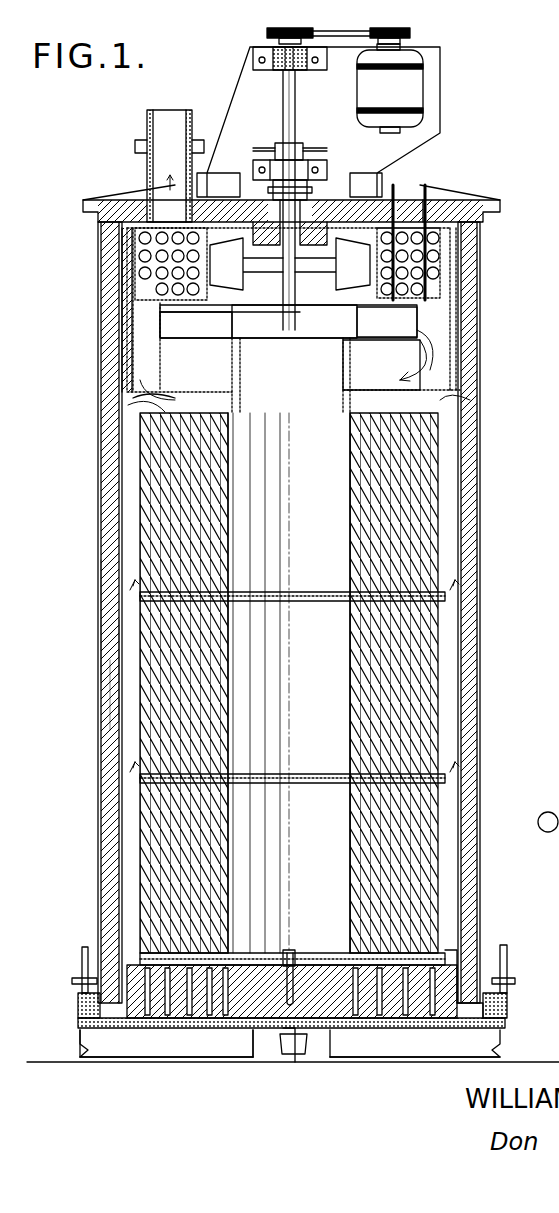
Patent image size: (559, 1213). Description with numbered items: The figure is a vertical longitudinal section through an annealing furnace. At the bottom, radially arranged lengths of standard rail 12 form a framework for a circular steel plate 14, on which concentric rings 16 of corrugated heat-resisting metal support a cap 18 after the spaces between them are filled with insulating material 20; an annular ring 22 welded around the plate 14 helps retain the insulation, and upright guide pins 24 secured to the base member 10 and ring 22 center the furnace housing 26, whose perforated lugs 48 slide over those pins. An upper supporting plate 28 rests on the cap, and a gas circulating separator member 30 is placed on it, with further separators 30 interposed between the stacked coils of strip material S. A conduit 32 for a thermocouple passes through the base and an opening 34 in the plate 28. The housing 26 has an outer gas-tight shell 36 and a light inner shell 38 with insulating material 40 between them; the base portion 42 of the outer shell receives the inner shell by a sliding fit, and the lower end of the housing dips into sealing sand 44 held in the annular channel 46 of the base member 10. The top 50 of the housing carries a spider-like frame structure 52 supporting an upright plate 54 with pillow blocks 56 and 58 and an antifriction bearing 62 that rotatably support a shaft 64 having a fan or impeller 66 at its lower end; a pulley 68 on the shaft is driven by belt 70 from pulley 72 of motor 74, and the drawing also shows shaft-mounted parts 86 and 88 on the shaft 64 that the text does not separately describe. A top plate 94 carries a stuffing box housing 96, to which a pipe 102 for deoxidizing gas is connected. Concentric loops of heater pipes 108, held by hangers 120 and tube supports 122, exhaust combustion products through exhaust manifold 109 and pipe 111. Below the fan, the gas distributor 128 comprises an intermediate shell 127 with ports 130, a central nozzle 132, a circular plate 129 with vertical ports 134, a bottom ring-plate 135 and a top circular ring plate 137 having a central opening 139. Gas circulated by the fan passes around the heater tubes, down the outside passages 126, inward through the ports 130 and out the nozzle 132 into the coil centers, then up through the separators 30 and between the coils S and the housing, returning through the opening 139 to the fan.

The base member 10 is at (78, 1033).
The standard rail 12 is at (172, 1050).
The circular steel plate 14 is at (290, 1030).
The concentric rings 16 is at (210, 1010).
The cap 18 is at (470, 950).
The insulating material 20 is at (330, 1040).
The annular ring 22 is at (507, 1002).
The guide pins 24 is at (82, 950).
The furnace housing 26 is at (96, 540).
The upper supporting plate 28 is at (125, 960).
The gas circulating separator member 30 is at (328, 598).
The conduit 32 is at (290, 953).
The opening 34 is at (305, 958).
The outer gas-tight shell 36 is at (100, 618).
The inner shell 38 is at (122, 668).
The insulating material 40 is at (110, 695).
The base portion 42 is at (465, 1020).
The sealing sand 44 is at (78, 1000).
The annular channel 46 is at (550, 812).
The lugs 48 is at (72, 978).
The top 50 is at (482, 203).
The spider-like frame structure 52 is at (380, 185).
The upright plate 54 is at (440, 62).
The pillow block 56 is at (280, 165).
The pillow block 58 is at (253, 62).
The antifriction bearing 62 is at (300, 64).
The shaft 64 is at (283, 112).
The fan or impeller 66 is at (345, 275).
The pulley 68 is at (267, 34).
The belt 70 is at (312, 42).
The pulley 72 is at (410, 33).
The motor 74 is at (410, 88).
The collar 86 is at (296, 148).
The collar pin 88 is at (310, 152).
The top plate 94 is at (450, 200).
The stuffing box housing 96 is at (278, 193).
The pipe 102 is at (305, 200).
The heater pipes 108 is at (140, 272).
The exhaust manifold 109 is at (127, 280).
The pipe 111 is at (147, 128).
The hangers 120 is at (425, 185).
The tube supports 122 is at (440, 272).
The outside passages 126 is at (440, 320).
The intermediate shell 127 is at (160, 328).
The gas distributor 128 is at (150, 347).
The circular plate 129 is at (340, 372).
The ports 130 is at (380, 372).
The central nozzle 132 is at (300, 335).
The vertical ports 134 is at (170, 372).
The bottom ring-plate 135 is at (140, 400).
The top circular ring plate 137 is at (350, 305).
The central opening 139 is at (280, 305).
The coils of strip material S is at (350, 484).